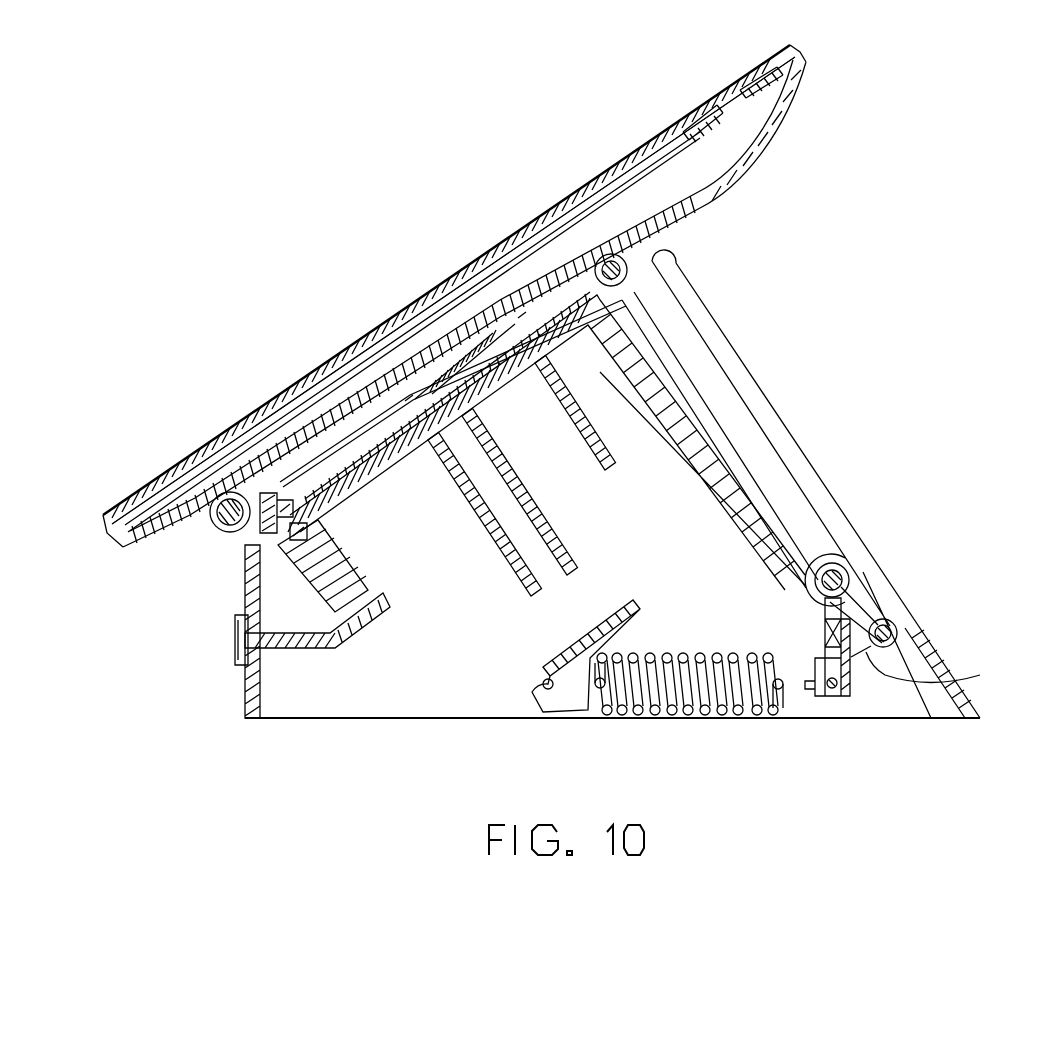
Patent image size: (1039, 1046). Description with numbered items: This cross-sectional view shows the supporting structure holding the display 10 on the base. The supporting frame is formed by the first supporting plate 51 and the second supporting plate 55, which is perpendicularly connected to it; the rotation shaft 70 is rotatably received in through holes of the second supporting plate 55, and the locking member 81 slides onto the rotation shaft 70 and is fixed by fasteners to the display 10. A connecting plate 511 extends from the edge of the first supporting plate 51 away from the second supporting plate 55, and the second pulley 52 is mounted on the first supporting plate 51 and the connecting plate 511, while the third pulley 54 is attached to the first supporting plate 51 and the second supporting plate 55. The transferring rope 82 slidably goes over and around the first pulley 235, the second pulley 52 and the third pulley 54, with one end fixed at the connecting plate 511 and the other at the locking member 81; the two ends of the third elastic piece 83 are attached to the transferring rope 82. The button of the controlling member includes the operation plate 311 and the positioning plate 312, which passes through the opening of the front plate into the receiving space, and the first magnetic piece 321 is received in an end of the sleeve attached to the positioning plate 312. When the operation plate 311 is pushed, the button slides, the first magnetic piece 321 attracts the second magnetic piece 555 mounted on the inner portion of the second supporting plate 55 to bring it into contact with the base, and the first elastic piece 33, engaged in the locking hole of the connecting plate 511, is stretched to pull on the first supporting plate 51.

The display 10 is at (630, 150).
The transferring rope 82 is at (533, 300).
The third elastic piece 83 is at (448, 347).
The second supporting plate 55 is at (345, 412).
The second magnetic piece 555 is at (250, 437).
The third pulley 54 is at (632, 268).
The first supporting plate 51 is at (667, 373).
The second pulley 52 is at (832, 565).
The first pulley 235 is at (893, 622).
The locking member 81 is at (210, 523).
The rotation shaft 70 is at (255, 540).
The first magnetic piece 321 is at (297, 560).
The operation plate 311 is at (243, 643).
The positioning plate 312 is at (305, 648).
The first elastic piece 33 is at (753, 717).
The connecting plate 511 is at (828, 672).